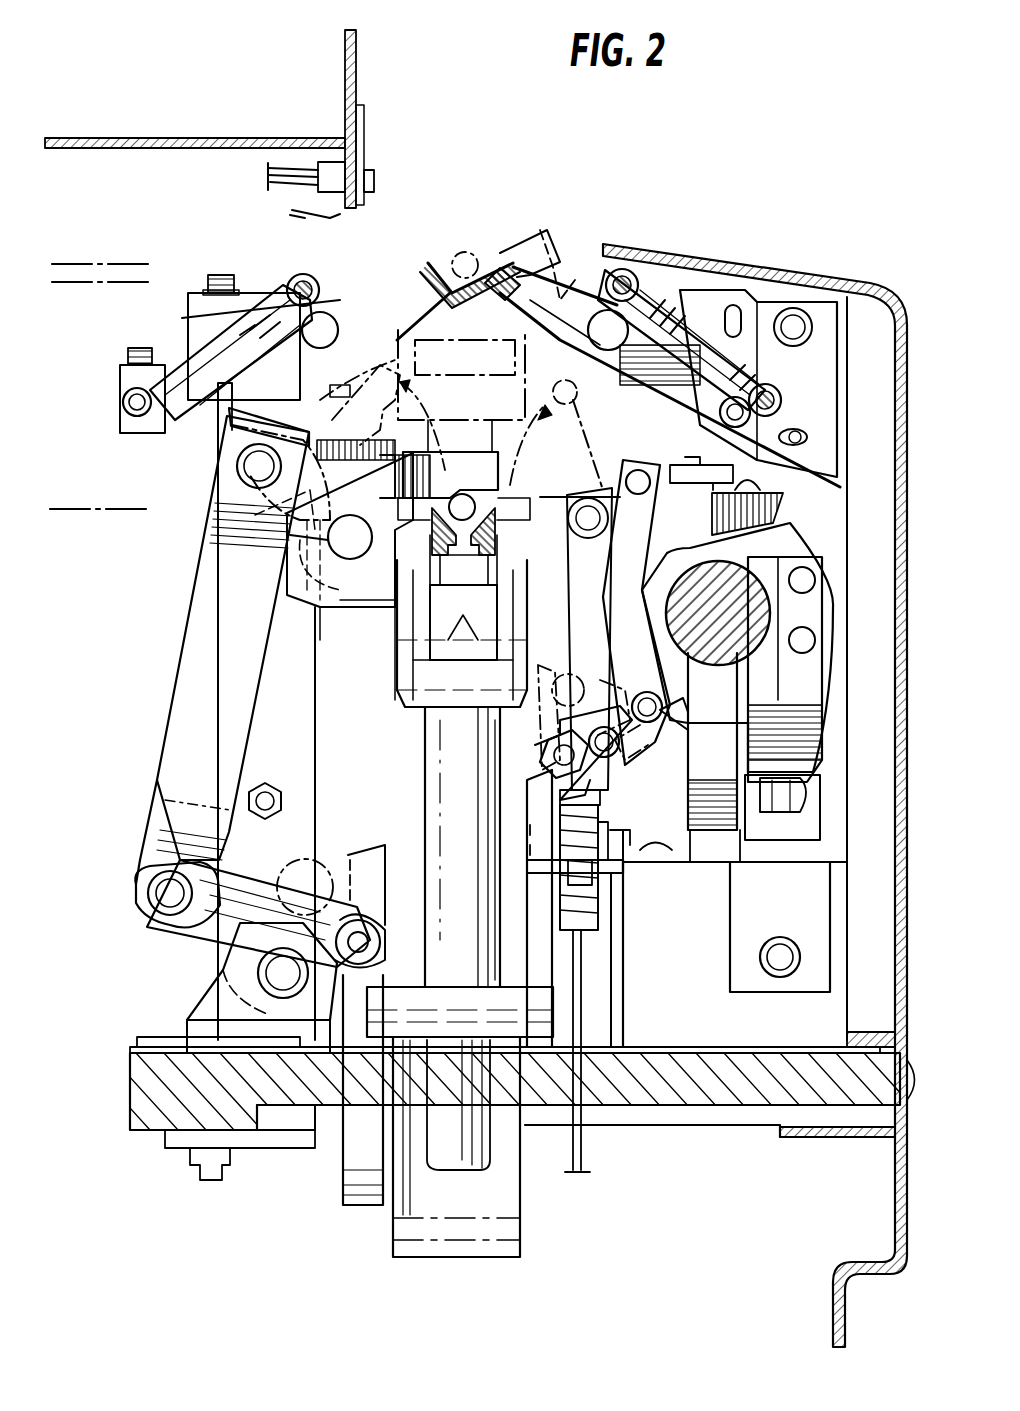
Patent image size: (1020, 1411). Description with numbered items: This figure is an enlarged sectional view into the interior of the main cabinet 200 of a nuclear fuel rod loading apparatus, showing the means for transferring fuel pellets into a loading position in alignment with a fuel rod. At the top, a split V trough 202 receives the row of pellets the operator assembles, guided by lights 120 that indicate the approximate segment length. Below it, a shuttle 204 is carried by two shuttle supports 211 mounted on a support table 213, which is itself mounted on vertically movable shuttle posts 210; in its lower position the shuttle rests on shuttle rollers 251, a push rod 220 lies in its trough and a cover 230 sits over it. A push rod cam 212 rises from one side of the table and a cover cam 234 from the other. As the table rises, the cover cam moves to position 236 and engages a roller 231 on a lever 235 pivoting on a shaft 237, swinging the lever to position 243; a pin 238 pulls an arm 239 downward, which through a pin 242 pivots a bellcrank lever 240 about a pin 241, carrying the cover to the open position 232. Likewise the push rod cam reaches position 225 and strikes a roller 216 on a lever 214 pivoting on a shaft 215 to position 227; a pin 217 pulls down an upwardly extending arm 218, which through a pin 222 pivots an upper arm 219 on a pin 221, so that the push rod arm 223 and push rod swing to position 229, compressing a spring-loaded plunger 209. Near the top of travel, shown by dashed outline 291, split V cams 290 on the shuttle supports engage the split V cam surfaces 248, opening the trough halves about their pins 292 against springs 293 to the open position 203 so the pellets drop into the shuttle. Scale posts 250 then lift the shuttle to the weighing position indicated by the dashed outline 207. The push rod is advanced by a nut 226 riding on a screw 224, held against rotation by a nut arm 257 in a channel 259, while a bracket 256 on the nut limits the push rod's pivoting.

The lights 120 is at (370, 182).
The main cabinet 200 is at (905, 868).
The split V trough 202 is at (500, 262).
The open position of split V trough 203 is at (550, 238).
The shuttle 204 is at (478, 510).
The dashed outline of raised pellet position 207 is at (465, 252).
The spring-loaded plunger 209 is at (652, 700).
The shuttle posts 210 is at (508, 1218).
The shuttle supports 211 is at (425, 752).
The push rod cam 212 is at (515, 800).
The support table 213 is at (462, 992).
The lever 214 is at (632, 740).
The shaft 215 is at (618, 760).
The roller 216 is at (565, 778).
The pin 217 is at (665, 705).
The upwardly extending arm 218 is at (653, 668).
The upper arm 219 is at (600, 470).
The push rod 220 is at (462, 494).
The pin 221 is at (585, 498).
The pin 222 is at (640, 470).
The push rod arm 223 is at (535, 500).
The screw 224 is at (735, 585).
The raised position of push rod cam 225 is at (545, 668).
The nut 226 is at (795, 545).
The pivoted position of lever 227 is at (572, 678).
The swung-out position of push rod 229 is at (590, 416).
The cover 230 is at (410, 466).
The roller 231 is at (380, 925).
The open position of cover 232 is at (371, 415).
The cover cam 234 is at (380, 990).
The lever 235 is at (262, 880).
The raised position of cover cam 236 is at (375, 850).
The shaft 237 is at (270, 982).
The pin 238 is at (143, 922).
The arm 239 is at (192, 680).
The bellcrank lever 240 is at (318, 485).
The pin 241 is at (350, 535).
The pin 242 is at (237, 467).
The pivoted position of lever 243 is at (330, 868).
The split V cam surfaces 248 is at (432, 322).
The scale posts 250 is at (438, 772).
The shuttle rollers 251 is at (432, 552).
The bracket 256 is at (690, 465).
The nut arm 257 is at (820, 718).
The channel 259 is at (780, 822).
The split V cams 290 is at (395, 598).
The uppermost position of shuttle 291 is at (570, 302).
The pin 292 is at (335, 330).
The springs 293 is at (268, 296).